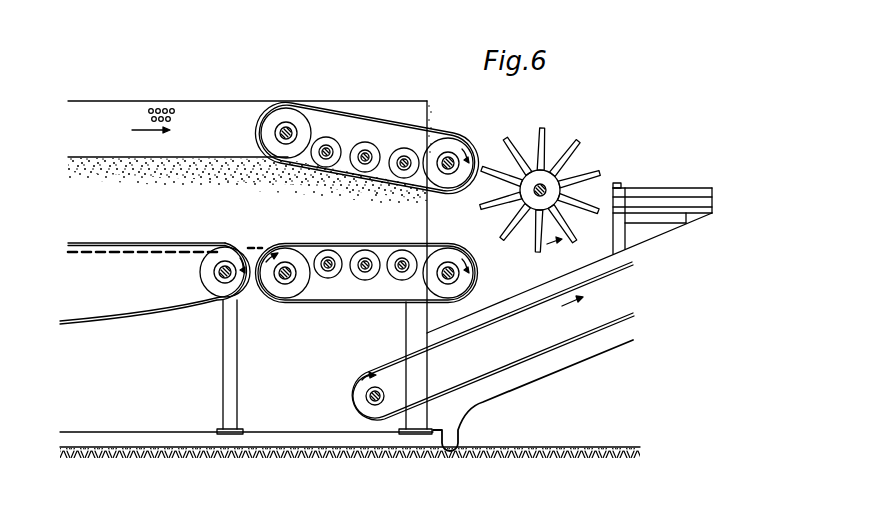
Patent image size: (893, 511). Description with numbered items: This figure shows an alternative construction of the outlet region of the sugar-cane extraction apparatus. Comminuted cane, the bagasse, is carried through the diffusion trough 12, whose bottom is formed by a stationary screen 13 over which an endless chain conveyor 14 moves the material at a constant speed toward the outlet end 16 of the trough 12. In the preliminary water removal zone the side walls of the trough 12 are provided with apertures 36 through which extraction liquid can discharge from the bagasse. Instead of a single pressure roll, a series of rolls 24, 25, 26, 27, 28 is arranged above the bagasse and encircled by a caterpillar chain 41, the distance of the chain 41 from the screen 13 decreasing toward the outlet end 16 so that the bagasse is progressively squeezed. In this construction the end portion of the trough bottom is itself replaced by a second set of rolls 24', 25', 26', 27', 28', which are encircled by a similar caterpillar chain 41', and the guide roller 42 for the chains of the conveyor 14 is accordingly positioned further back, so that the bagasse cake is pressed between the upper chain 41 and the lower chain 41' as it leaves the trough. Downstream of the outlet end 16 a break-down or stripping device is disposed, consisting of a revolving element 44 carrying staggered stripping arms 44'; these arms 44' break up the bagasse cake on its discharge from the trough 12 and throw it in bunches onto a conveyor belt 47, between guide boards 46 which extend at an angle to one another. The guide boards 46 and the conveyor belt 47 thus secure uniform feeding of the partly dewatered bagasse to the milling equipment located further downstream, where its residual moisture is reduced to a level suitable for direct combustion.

The diffusion trough 12 is at (98, 116).
The apertures 36 is at (158, 108).
The roll 24 is at (281, 113).
The caterpillar chain 41 is at (366, 130).
The roll 25 is at (312, 176).
The roll 26 is at (357, 186).
The roll 27 is at (405, 122).
The roll 28 is at (448, 147).
The outlet end 16 is at (433, 106).
The stationary screen 13 is at (127, 254).
The endless chain conveyor 14 is at (129, 321).
The guide roller 42 is at (214, 290).
The roll 24' is at (284, 292).
The caterpillar chain 41' is at (367, 301).
The roll 25' is at (318, 291).
The roll 26' is at (374, 246).
The roll 27' is at (394, 294).
The roll 28' is at (448, 256).
The revolving element 44 is at (553, 190).
The stripping arms 44' is at (558, 133).
The guide boards 46 is at (661, 192).
The conveyor belt 47 is at (538, 364).